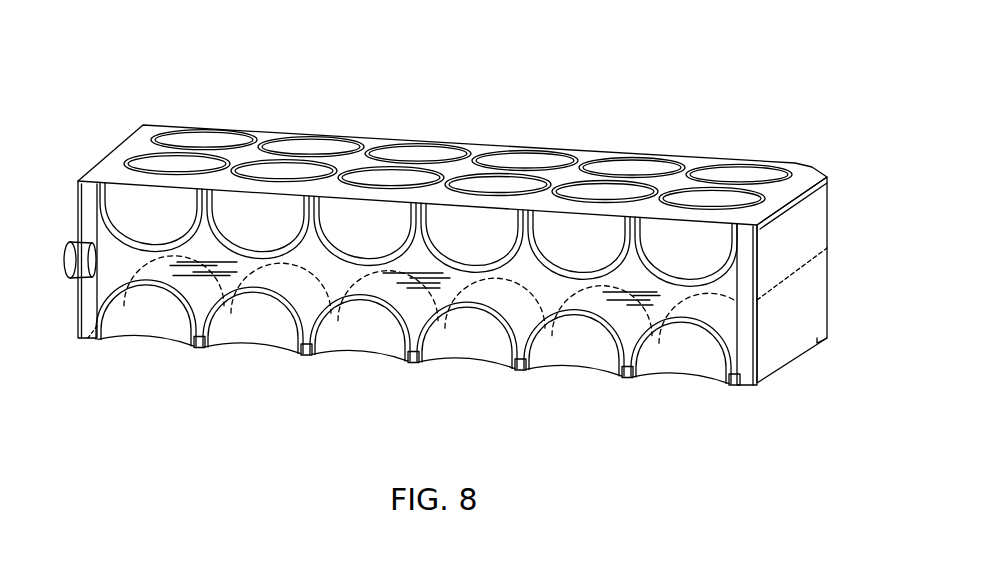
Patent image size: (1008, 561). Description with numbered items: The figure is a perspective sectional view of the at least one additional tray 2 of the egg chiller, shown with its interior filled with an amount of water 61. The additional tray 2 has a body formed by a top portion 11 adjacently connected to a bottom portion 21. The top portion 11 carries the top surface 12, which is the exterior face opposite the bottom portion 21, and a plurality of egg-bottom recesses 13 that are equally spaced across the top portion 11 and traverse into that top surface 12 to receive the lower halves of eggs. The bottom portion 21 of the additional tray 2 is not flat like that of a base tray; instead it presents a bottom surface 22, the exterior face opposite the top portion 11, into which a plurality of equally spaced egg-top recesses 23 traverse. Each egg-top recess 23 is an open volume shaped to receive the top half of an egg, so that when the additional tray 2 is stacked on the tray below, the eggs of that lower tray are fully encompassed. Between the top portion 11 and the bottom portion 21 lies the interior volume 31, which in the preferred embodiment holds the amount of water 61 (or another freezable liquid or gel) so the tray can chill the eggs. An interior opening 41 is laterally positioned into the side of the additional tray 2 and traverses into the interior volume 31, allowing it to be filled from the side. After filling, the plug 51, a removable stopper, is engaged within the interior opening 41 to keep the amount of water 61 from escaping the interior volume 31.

The additional tray 2 is at (447, 62).
The top portion 11 is at (781, 251).
The top surface 12 is at (263, 133).
The egg-bottom recesses 13 is at (140, 220).
The bottom portion 21 is at (779, 331).
The bottom surface 22 is at (739, 385).
The egg-top recesses 23 is at (242, 326).
The interior volume 31 is at (425, 318).
The interior opening 41 is at (86, 292).
The plug 51 is at (70, 243).
The amount of water 61 is at (200, 296).